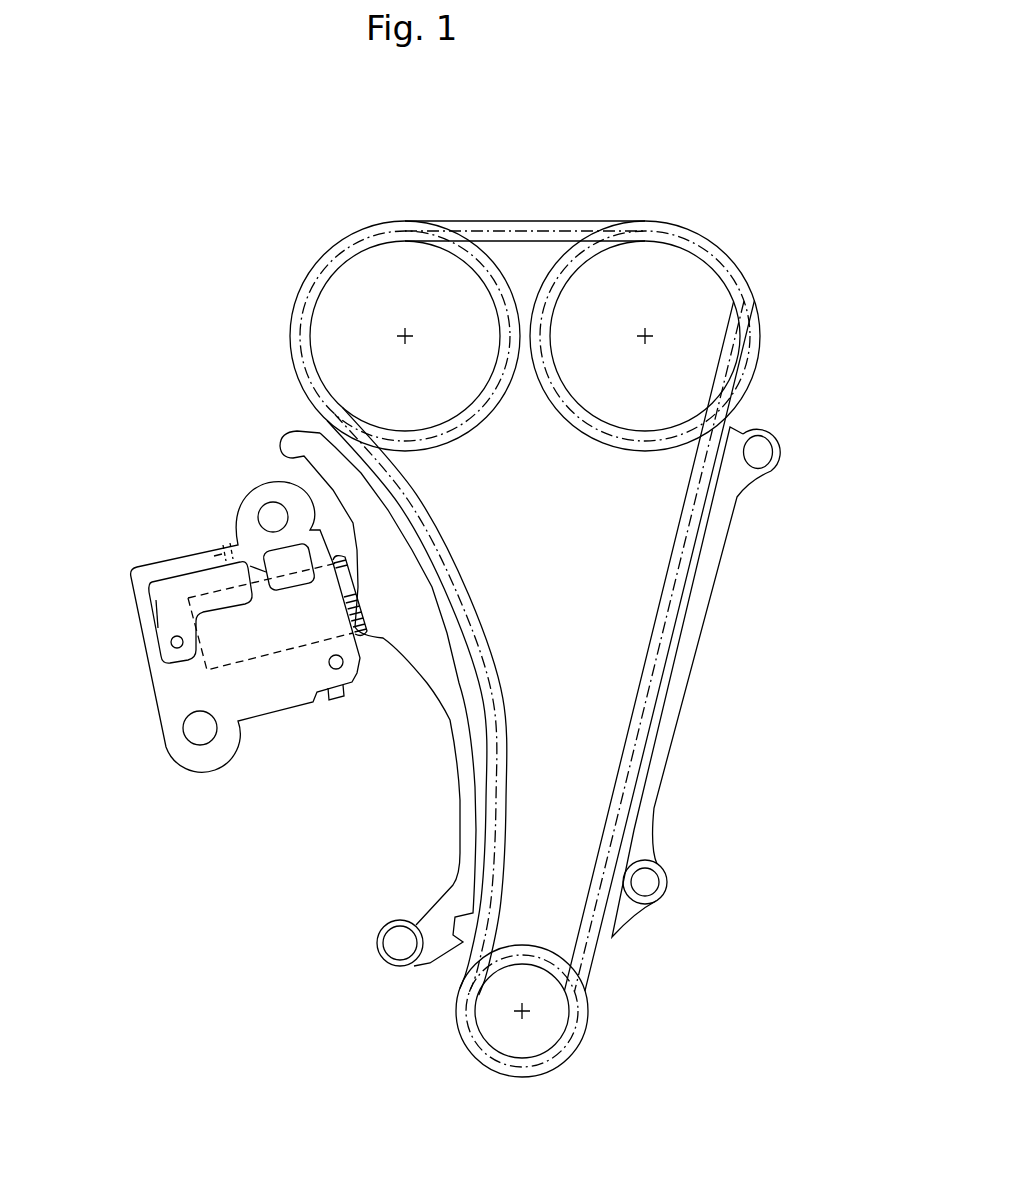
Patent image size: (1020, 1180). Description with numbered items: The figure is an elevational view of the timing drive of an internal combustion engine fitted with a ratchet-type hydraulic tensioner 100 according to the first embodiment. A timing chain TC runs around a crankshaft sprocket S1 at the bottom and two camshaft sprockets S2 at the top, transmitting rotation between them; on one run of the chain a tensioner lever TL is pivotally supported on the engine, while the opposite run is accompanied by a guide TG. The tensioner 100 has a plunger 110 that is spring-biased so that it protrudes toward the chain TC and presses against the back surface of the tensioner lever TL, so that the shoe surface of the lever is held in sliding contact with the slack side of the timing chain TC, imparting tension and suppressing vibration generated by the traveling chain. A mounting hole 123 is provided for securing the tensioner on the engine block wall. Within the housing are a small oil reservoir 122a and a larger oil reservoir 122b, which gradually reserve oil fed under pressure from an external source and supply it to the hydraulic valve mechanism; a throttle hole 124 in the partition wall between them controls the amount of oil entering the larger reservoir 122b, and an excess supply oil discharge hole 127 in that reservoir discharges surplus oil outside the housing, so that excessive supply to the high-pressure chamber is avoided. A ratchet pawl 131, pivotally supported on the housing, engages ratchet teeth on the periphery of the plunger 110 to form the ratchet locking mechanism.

The camshaft sprockets S2 is at (403, 205).
The timing chain TC is at (528, 205).
The crankshaft sprocket S1 is at (605, 1026).
The chain guide TG is at (758, 723).
The tensioner lever TL is at (450, 811).
The ratchet-type hydraulic tensioner 100 is at (269, 750).
The plunger 110 is at (363, 634).
The small oil reservoir 122a is at (268, 553).
The larger oil reservoir 122b is at (160, 613).
The mounting hole 123 is at (272, 506).
The throttle hole 124 is at (229, 546).
The excess supply oil discharge hole 127 is at (220, 553).
The ratchet pawl 131 is at (338, 700).